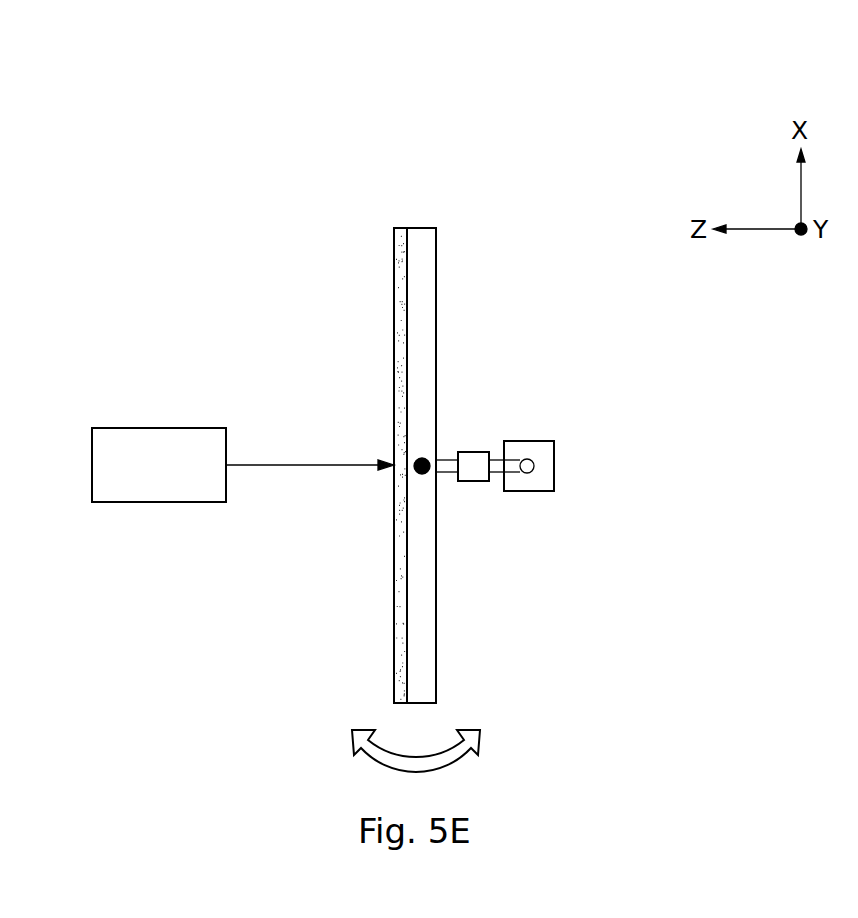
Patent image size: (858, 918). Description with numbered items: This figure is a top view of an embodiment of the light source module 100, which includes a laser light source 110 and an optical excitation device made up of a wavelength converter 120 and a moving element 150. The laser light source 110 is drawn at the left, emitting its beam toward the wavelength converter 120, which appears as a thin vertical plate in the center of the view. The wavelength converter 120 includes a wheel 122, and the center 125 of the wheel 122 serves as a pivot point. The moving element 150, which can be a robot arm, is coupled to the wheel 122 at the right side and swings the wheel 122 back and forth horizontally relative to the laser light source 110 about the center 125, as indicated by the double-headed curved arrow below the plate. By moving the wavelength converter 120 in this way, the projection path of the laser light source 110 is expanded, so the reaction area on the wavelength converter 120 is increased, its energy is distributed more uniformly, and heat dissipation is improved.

The light source module 100 is at (119, 70).
The laser light source 110 is at (160, 428).
The wavelength converter 120 is at (417, 228).
The wheel 122 is at (422, 258).
The center of the wheel 125 is at (414, 472).
The moving element 150 is at (531, 461).